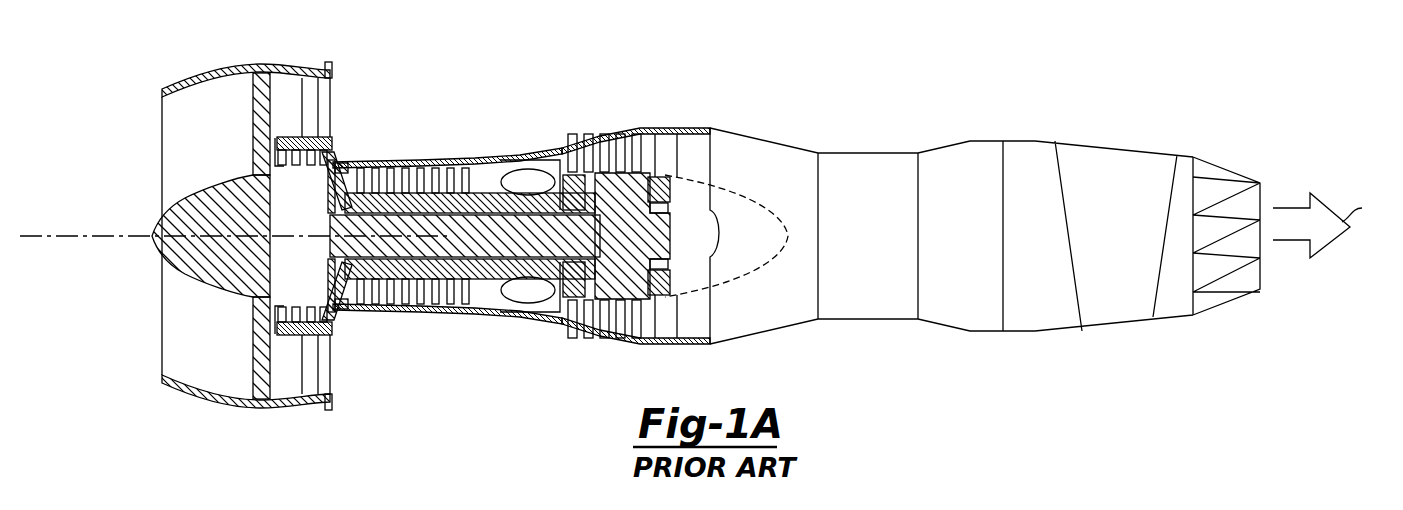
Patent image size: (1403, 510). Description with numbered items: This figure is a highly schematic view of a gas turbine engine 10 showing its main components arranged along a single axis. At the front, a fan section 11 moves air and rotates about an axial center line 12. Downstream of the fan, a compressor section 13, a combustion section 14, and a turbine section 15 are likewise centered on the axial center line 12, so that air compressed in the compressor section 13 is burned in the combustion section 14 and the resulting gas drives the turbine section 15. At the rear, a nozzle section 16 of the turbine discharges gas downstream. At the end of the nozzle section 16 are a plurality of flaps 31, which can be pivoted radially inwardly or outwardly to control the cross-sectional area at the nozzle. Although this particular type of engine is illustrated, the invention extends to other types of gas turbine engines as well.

The gas turbine engine 10 is at (699, 230).
The fan section 11 is at (265, 398).
The axial center line 12 is at (77, 236).
The compressor section 13 is at (287, 197).
The combustion section 14 is at (520, 290).
The turbine section 15 is at (676, 122).
The nozzle section 16 is at (1118, 142).
The flaps 31 is at (1215, 195).